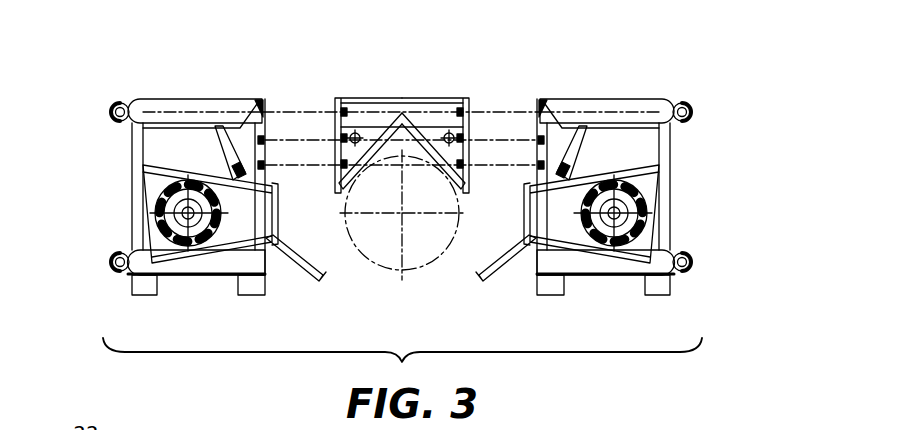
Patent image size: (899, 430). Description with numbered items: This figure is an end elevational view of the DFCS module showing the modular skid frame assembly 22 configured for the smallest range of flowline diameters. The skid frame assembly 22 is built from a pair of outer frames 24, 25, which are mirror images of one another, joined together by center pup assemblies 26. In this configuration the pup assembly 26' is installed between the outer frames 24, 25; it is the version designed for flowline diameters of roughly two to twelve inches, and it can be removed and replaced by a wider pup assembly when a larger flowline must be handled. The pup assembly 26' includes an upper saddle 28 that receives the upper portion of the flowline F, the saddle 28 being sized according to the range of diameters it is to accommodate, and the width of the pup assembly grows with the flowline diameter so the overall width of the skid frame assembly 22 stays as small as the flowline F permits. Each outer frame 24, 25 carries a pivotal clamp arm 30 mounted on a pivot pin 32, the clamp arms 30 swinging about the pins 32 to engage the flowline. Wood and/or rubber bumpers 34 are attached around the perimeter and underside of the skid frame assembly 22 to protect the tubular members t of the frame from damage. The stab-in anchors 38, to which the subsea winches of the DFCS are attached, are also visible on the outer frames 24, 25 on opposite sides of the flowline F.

The skid frame assembly 22 is at (395, 167).
The outer frame 24 is at (248, 100).
The outer frame 25 is at (590, 98).
The center pup assembly 26 is at (368, 116).
The pup assembly 26' is at (441, 113).
The upper saddle 28 is at (380, 127).
The pivotal clamp arm 30 is at (305, 288).
The pivot pin 32 is at (222, 135).
The bumper 34 is at (690, 108).
The stab-in anchor 38 is at (160, 213).
The flowline F is at (420, 272).
The tubular member t is at (155, 100).